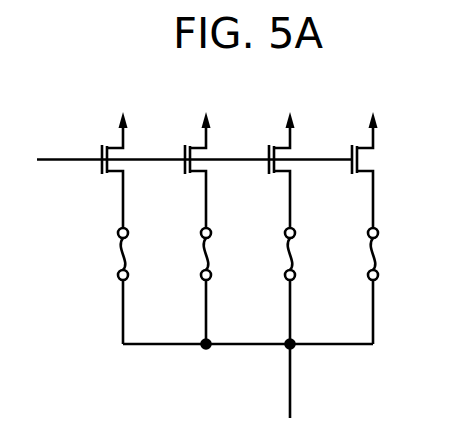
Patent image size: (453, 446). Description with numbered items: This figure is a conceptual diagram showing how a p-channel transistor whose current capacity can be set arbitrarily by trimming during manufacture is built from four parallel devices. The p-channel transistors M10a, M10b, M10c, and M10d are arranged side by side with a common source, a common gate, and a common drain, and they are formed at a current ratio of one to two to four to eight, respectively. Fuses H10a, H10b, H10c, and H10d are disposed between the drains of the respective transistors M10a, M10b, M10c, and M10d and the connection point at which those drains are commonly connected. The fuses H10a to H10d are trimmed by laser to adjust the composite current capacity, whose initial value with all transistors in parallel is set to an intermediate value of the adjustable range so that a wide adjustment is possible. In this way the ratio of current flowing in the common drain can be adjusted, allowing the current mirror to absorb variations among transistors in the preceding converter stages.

The p-channel transistor M10a is at (126, 152).
The p-channel transistor M10b is at (209, 152).
The p-channel transistor M10c is at (293, 152).
The p-channel transistor M10d is at (376, 152).
The fuse H10a is at (121, 260).
The fuse H10b is at (204, 260).
The fuse H10c is at (288, 260).
The fuse H10d is at (371, 260).